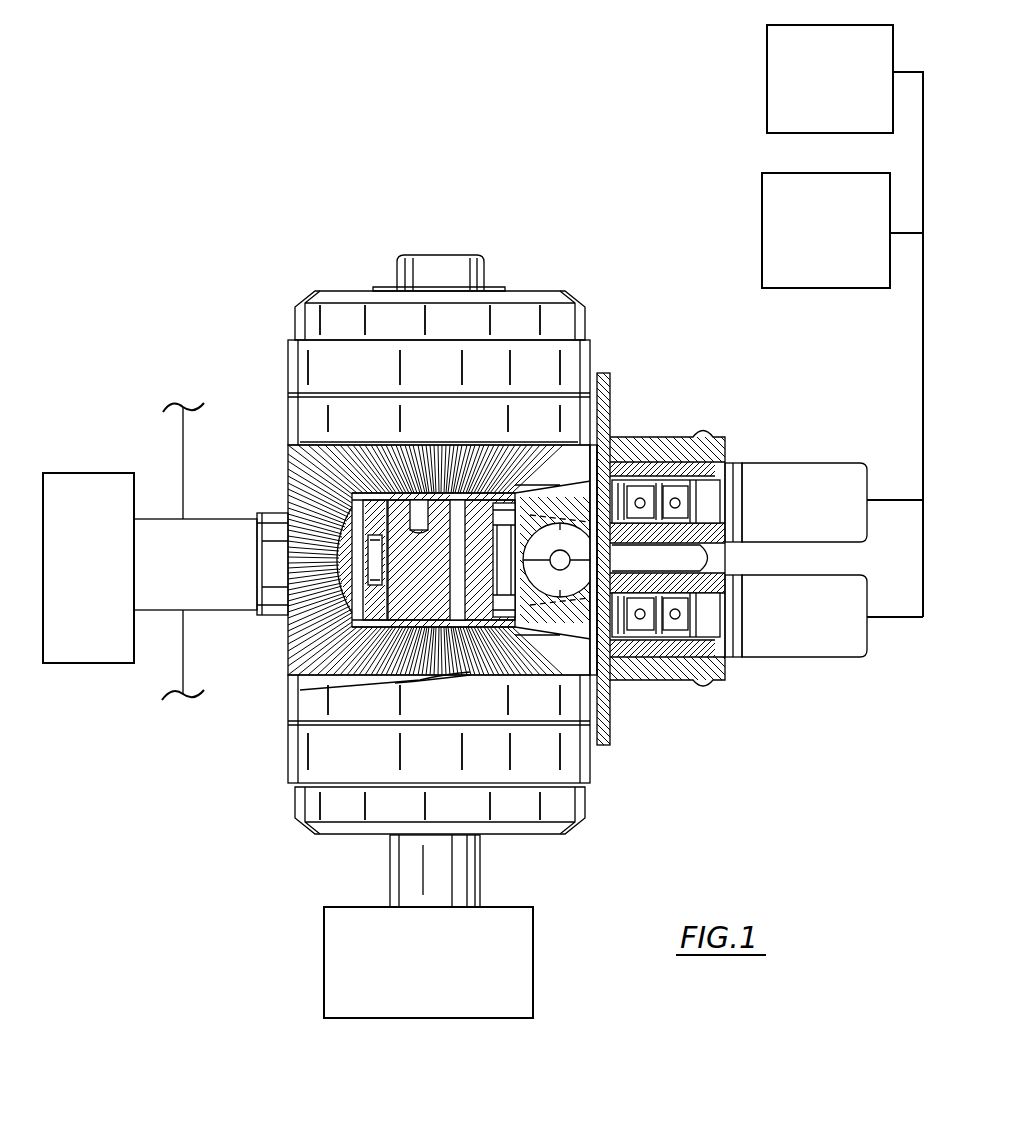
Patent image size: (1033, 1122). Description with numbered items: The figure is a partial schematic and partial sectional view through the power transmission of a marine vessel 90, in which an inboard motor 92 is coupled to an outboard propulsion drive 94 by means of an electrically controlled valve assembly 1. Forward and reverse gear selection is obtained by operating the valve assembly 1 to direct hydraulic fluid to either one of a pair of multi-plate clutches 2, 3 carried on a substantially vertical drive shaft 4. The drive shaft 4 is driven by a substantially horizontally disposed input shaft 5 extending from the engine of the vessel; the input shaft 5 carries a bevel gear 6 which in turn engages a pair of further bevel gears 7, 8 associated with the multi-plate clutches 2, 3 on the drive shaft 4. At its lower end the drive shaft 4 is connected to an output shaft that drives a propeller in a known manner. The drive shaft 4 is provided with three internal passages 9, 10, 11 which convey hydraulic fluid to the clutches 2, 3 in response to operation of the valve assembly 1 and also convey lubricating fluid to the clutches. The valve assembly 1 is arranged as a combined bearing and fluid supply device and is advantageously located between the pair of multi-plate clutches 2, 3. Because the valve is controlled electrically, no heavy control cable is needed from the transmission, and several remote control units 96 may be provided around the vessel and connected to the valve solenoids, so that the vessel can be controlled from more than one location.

The valve assembly 1 is at (700, 410).
The multi-plate clutch 2 is at (295, 388).
The multi-plate clutch 3 is at (330, 700).
The drive shaft 4 is at (392, 903).
The input shaft 5 is at (240, 598).
The bevel gear 6 is at (290, 469).
The bevel gear 7 is at (602, 440).
The bevel gear 8 is at (610, 700).
The internal passage 9 is at (332, 437).
The internal passage 10 is at (345, 688).
The internal passage 11 is at (395, 683).
The marine vessel 90 is at (177, 670).
The inboard motor 92 is at (88, 568).
The outboard propulsion drive 94 is at (428, 962).
The remote control unit 96 is at (824, 341).